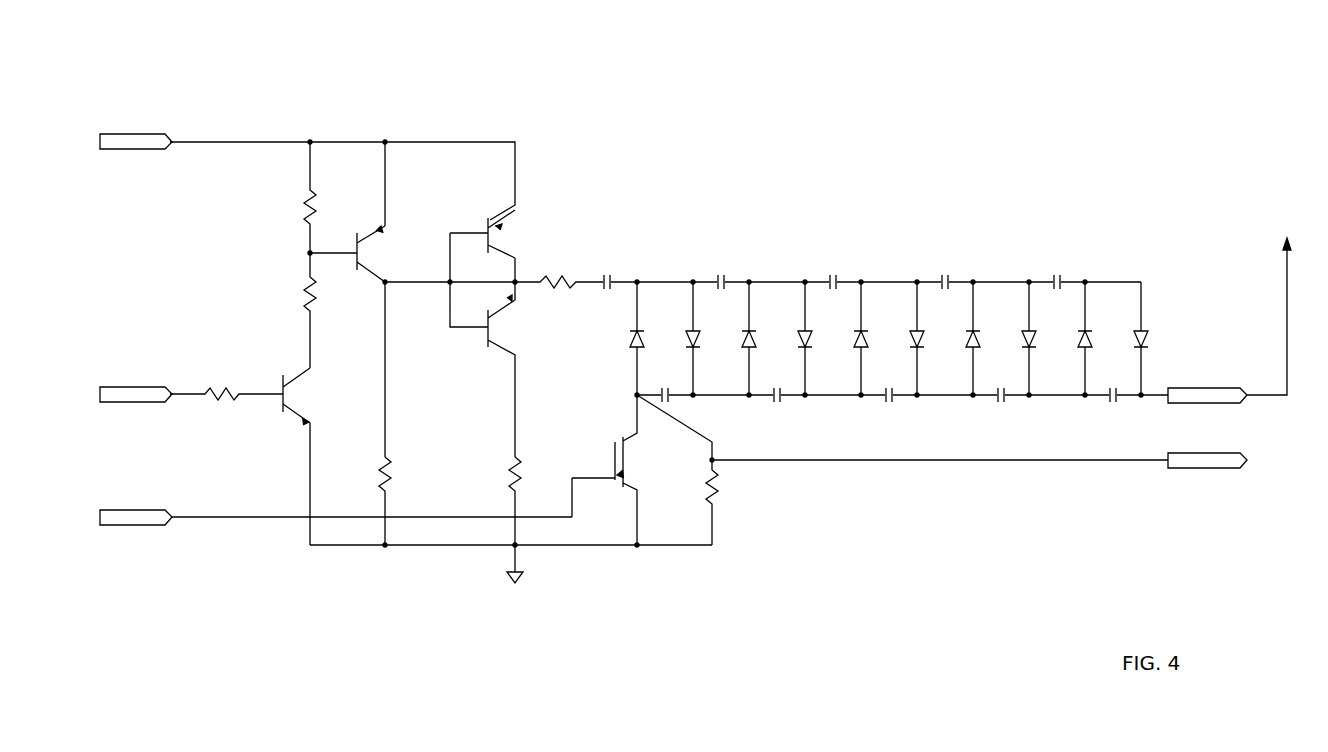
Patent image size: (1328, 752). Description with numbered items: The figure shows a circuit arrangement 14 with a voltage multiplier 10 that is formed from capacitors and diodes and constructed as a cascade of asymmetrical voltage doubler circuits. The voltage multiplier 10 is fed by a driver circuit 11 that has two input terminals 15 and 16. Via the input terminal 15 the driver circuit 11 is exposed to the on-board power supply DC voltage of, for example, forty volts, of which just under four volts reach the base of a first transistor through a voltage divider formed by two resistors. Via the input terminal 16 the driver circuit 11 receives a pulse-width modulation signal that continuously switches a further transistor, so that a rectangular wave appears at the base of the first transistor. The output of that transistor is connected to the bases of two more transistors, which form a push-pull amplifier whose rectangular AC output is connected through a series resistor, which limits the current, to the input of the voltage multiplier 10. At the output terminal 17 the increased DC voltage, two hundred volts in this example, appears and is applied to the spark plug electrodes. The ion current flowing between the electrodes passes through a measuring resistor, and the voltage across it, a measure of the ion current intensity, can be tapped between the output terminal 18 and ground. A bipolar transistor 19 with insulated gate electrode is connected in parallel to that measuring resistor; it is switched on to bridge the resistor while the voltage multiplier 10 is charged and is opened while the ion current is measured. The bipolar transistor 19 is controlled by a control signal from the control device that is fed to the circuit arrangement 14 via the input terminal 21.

The voltage multiplier 10 is at (1099, 258).
The driver circuit 11 is at (463, 121).
The circuit arrangement 14 is at (707, 147).
The input terminal 15 is at (143, 150).
The input terminal 16 is at (120, 388).
The output terminal 17 is at (1212, 388).
The output terminal 18 is at (1207, 472).
The bipolar transistor with insulated gate electrode 19 is at (610, 465).
The input terminal 21 is at (145, 527).